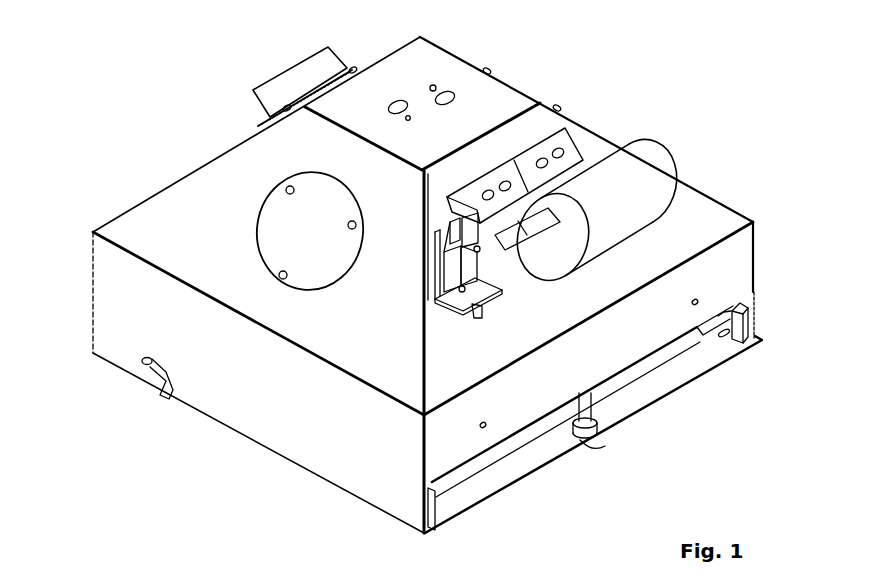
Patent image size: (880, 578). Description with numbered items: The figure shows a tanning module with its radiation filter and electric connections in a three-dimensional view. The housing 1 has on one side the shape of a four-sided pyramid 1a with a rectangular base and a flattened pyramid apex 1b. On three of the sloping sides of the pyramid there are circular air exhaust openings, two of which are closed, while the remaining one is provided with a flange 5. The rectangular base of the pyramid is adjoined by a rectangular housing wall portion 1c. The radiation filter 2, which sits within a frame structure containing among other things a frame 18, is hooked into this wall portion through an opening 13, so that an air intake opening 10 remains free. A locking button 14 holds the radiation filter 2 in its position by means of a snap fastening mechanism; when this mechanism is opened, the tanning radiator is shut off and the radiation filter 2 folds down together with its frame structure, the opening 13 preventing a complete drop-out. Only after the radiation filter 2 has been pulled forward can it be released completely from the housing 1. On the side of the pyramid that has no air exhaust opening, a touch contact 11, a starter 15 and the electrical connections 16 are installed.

The housing 1 is at (715, 197).
The four-sided pyramid 1a is at (215, 200).
The flattened pyramid apex 1b is at (412, 72).
The rectangular housing wall portion 1c is at (137, 317).
The radiation filter 2 is at (515, 440).
The flange 5 is at (300, 80).
The air intake opening 10 is at (703, 338).
The touch contact 11 is at (468, 297).
The opening 13 is at (157, 383).
The locking button 14 is at (588, 447).
The starter 15 is at (617, 177).
The electrical connections 16 is at (562, 140).
The frame 18 is at (503, 477).